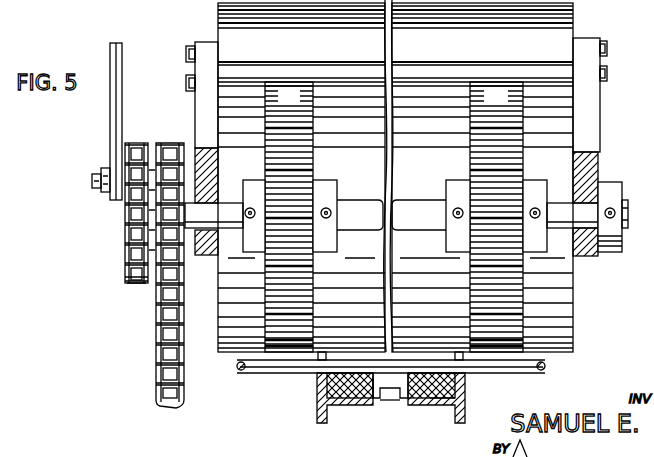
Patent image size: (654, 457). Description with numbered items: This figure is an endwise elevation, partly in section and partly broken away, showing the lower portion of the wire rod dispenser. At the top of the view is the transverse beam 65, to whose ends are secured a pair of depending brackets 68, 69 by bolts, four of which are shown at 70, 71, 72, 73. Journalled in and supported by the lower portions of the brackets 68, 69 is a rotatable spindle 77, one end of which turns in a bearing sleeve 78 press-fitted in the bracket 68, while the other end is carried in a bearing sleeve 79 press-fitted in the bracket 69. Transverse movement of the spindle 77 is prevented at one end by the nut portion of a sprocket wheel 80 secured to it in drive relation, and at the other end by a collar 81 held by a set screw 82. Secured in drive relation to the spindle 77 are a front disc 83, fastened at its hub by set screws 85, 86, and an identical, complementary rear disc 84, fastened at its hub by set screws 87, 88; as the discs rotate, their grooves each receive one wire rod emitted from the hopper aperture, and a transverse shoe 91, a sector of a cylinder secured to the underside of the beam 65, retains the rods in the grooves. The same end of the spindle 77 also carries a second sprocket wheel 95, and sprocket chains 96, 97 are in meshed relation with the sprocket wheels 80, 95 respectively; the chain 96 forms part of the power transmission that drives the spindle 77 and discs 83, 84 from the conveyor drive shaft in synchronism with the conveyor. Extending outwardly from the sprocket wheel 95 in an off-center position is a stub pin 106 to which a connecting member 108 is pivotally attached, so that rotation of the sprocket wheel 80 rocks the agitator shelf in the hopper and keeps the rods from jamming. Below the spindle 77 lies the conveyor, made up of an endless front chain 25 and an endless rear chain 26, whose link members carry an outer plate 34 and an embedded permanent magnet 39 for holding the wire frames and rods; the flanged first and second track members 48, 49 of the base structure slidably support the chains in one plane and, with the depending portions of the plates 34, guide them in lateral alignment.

The endless front chain 25 is at (386, 386).
The endless rear chain 26 is at (390, 400).
The plate 34 is at (320, 414).
The permanent magnet 39 is at (317, 391).
The first track member 48 is at (438, 406).
The second track member 49 is at (350, 405).
The transverse beam 65 is at (423, 180).
The bracket 68 is at (200, 109).
The bracket 69 is at (598, 97).
The bolt 70 is at (607, 48).
The bolt 71 is at (607, 73).
The bolt 72 is at (186, 52).
The bolt 73 is at (186, 82).
The rotatable spindle 77 is at (348, 221).
The bearing sleeve 78 is at (224, 203).
The bearing sleeve 79 is at (598, 167).
The sprocket wheel 80 is at (172, 143).
The collar 81 is at (620, 192).
The set screw 82 is at (622, 236).
The front disc 83 is at (289, 217).
The rear disc 84 is at (496, 217).
The set screw 85 is at (250, 208).
The set screw 86 is at (326, 208).
The set screw 87 is at (458, 208).
The set screw 88 is at (535, 208).
The transverse shoe 91 is at (560, 137).
The sprocket wheel 95 is at (134, 287).
The sprocket chain 96 is at (185, 357).
The sprocket chain 97 is at (137, 143).
The stub pin 106 is at (92, 182).
The connecting member 108 is at (115, 109).